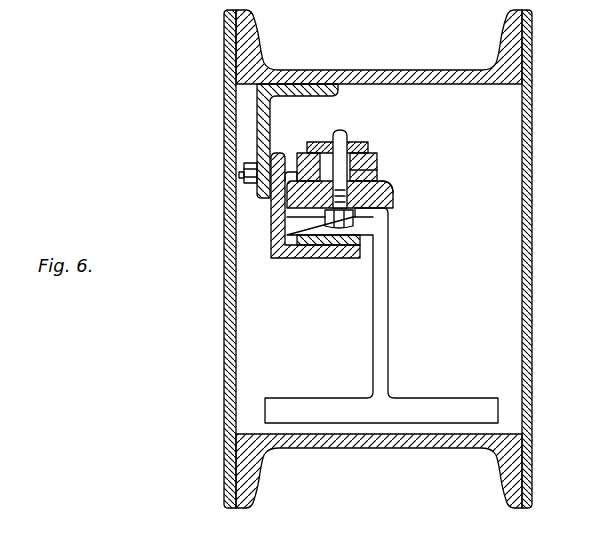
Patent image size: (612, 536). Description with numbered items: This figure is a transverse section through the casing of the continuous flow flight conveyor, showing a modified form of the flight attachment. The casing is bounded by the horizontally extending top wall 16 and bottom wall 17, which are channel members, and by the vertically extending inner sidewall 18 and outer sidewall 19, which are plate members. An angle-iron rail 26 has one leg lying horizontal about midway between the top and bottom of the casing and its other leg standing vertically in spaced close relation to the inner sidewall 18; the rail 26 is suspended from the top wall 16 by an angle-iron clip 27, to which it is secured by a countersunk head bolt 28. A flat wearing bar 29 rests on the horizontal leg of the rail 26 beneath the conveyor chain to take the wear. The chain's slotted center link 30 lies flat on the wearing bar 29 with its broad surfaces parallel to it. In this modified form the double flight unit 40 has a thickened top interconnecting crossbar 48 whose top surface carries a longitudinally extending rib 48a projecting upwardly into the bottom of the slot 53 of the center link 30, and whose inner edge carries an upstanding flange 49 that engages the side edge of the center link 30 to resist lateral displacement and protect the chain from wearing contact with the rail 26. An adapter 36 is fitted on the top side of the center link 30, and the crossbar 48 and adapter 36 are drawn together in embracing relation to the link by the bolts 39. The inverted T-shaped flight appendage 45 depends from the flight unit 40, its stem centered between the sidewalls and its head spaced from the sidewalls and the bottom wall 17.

The top wall 16 is at (422, 68).
The bottom wall 17 is at (368, 438).
The inner sidewall 18 is at (237, 338).
The outer sidewall 19 is at (526, 314).
The angle-iron track or rail 26 is at (274, 258).
The angle-iron clip 27 is at (257, 124).
The countersunk head bolt 28 is at (239, 176).
The flat bar member (wear plate) 29 is at (363, 239).
The center link 30 is at (380, 157).
The adapter 36 is at (367, 143).
The bolt 39 is at (342, 131).
The double flight unit 40 is at (386, 312).
The flight appendage 45 is at (388, 275).
The top interconnecting crossbar 48 is at (383, 193).
The longitudinally extending rib 48a is at (380, 176).
The upstanding flange 49 is at (287, 170).
The slot 53 is at (378, 172).